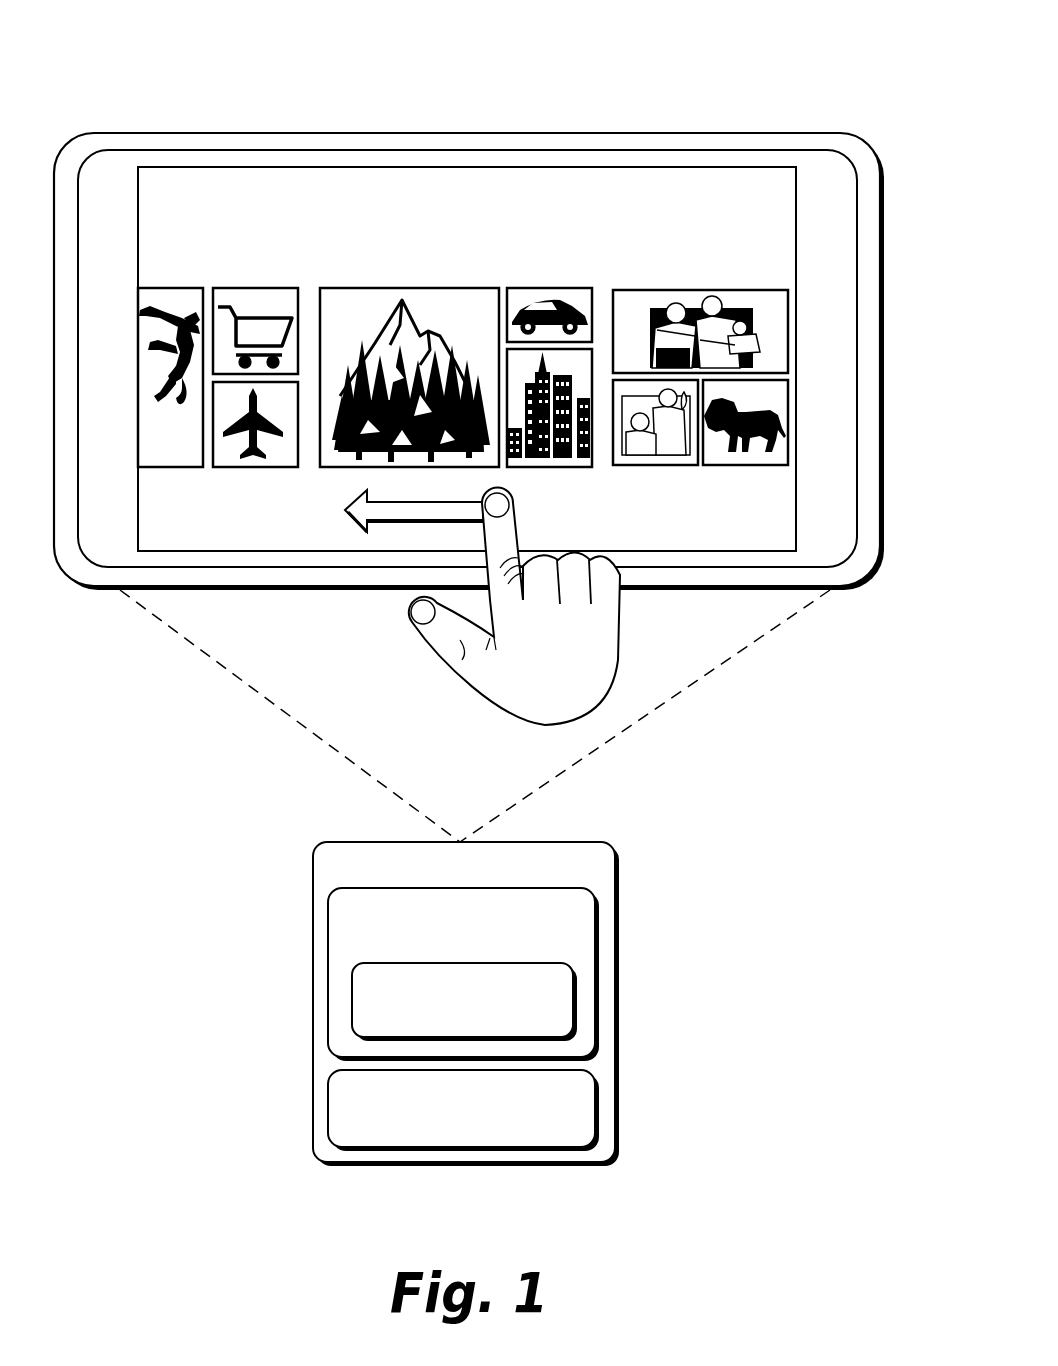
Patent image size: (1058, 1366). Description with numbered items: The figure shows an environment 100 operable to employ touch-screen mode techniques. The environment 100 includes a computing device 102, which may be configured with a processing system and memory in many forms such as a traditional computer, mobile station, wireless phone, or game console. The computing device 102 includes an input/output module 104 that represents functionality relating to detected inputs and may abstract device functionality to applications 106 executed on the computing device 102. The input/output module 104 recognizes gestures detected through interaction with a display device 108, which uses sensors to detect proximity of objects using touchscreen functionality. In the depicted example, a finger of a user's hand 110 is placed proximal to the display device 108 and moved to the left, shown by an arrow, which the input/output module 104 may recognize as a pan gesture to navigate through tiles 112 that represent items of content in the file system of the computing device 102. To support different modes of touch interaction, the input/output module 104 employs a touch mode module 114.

The environment 100 is at (180, 68).
The computing device 102 is at (588, 877).
The input/output module 104 is at (527, 954).
The applications 106 is at (548, 1121).
The display device 108 is at (193, 542).
The user's hand 110 is at (580, 687).
The tiles 112 is at (470, 277).
The touch mode module 114 is at (527, 1027).